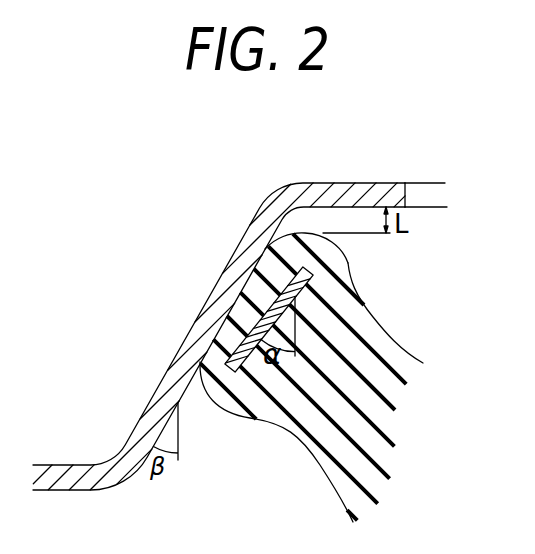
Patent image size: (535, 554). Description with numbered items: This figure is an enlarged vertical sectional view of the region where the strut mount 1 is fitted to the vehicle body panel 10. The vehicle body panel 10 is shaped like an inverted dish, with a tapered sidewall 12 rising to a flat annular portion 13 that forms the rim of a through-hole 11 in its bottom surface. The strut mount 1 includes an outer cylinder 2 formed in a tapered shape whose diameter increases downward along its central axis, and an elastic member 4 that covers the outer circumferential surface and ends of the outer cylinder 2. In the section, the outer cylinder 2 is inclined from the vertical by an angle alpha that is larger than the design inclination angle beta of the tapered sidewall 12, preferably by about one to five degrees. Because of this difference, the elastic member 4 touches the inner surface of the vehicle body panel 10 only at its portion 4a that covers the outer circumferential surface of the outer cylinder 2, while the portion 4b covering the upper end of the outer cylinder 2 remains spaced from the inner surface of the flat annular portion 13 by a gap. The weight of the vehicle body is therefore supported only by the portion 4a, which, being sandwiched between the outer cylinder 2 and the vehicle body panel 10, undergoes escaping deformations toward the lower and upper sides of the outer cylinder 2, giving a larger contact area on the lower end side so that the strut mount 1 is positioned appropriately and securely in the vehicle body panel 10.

The strut mount 1 is at (261, 305).
The outer cylinder 2 is at (240, 289).
The elastic member 4 is at (310, 322).
The portion of the elastic member covering the outer circumferential surface of the 4a is at (245, 313).
The portion of the elastic member covering the upper end of the outer cylinder 4b is at (327, 250).
The vehicle body panel 10 is at (57, 453).
The through-hole 11 is at (428, 188).
The tapered sidewall 12 is at (206, 320).
The flat annular portion 13 is at (361, 186).